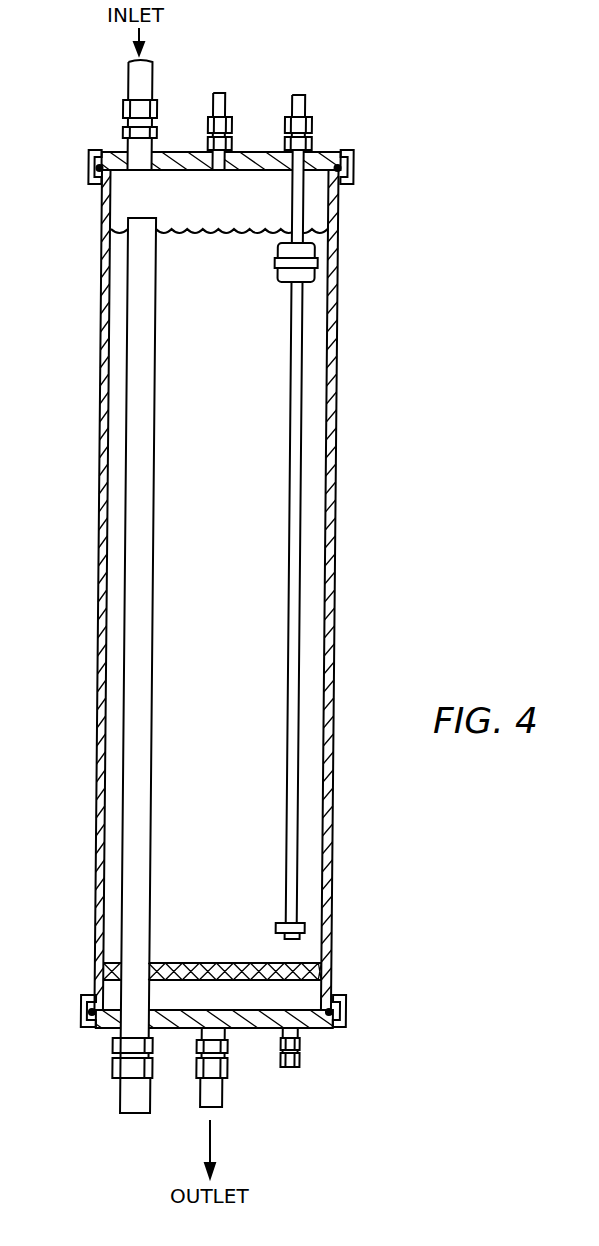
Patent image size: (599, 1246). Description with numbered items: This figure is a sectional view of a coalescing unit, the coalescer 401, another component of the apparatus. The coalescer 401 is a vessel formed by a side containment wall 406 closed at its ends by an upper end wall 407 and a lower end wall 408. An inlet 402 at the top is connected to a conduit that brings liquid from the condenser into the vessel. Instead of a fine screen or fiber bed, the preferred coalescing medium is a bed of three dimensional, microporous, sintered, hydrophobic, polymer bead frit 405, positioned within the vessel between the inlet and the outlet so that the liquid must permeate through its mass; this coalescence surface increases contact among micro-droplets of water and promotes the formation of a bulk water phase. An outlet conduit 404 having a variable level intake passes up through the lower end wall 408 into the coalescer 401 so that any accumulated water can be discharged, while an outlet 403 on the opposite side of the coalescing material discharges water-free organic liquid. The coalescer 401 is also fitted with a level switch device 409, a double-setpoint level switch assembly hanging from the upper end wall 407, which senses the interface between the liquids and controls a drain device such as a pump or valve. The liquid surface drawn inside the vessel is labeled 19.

The coalescer 401 is at (342, 362).
The inlet 402 is at (120, 100).
The outlet 403 is at (232, 1068).
The outlet conduit 404 is at (125, 553).
The frit 405 is at (114, 965).
The side containment wall 406 is at (335, 642).
The upper end wall 407 is at (326, 152).
The lower end wall 408 is at (322, 1032).
The level switch device 409 is at (315, 262).
The liquid level 19 is at (126, 216).